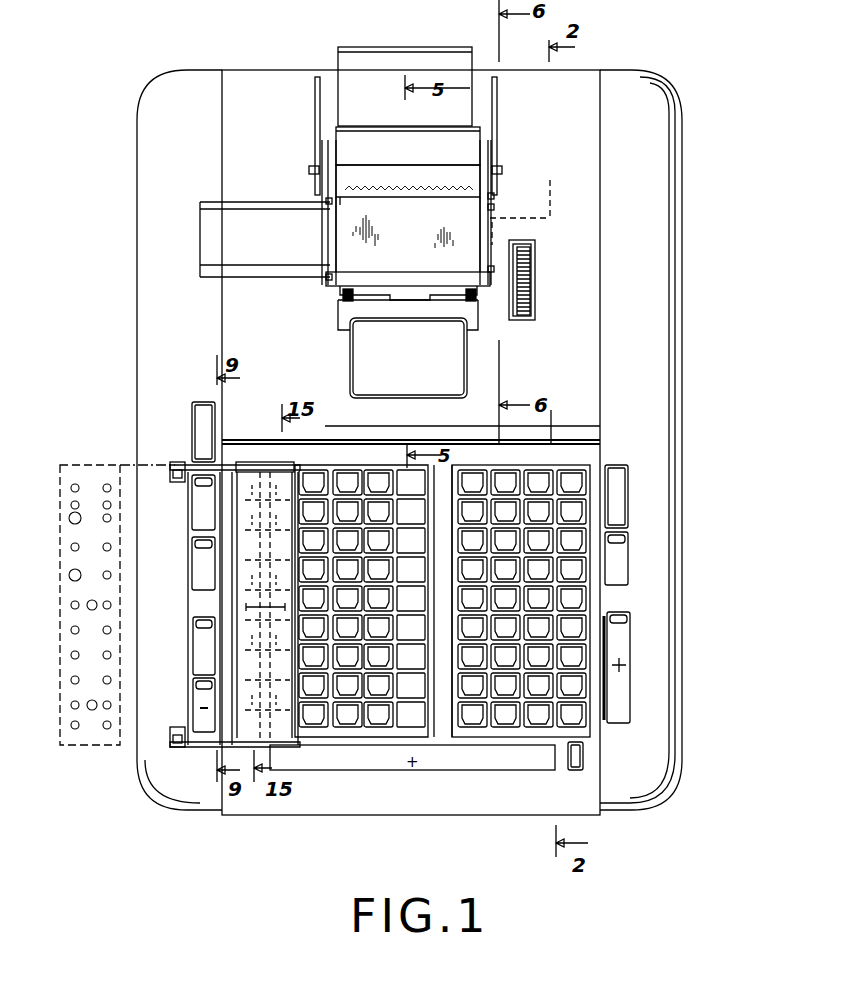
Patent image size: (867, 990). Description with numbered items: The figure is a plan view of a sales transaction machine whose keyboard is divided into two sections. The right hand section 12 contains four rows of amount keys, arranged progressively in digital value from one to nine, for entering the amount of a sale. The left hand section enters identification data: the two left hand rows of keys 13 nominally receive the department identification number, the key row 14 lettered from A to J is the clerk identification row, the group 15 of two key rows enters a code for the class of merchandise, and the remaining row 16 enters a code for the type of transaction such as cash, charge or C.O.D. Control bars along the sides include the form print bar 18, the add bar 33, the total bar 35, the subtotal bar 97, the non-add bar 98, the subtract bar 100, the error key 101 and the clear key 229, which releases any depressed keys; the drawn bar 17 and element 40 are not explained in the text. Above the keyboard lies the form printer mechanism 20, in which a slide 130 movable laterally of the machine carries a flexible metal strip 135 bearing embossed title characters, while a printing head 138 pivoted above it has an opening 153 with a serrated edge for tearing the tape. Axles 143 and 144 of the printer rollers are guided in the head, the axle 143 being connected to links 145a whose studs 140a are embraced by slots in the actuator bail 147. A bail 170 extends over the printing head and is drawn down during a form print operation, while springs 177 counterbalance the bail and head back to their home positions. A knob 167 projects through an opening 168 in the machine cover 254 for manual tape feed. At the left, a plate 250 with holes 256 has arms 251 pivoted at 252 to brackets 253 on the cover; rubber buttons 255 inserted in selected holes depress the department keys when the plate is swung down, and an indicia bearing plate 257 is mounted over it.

The right hand section 12 is at (570, 466).
The department identification key rows 13 is at (274, 470).
The clerk identification key row 14 is at (320, 470).
The merchandise class key group 15 is at (375, 468).
The transaction type key row 16 is at (403, 470).
The bottom plate 17 is at (392, 733).
The form print bar 18 is at (626, 472).
The form printer mechanism 20 is at (322, 148).
The add bar 33 is at (555, 737).
The total bar 35 is at (198, 515).
The key lever 40 is at (502, 733).
The subtotal bar 97 is at (198, 568).
The non-add bar 98 is at (197, 627).
The subtract bar 100 is at (197, 697).
The error key 101 is at (192, 422).
The slide 130 is at (298, 250).
The flexible metal strip 135 is at (390, 188).
The printing head 138 is at (455, 196).
The studs 140a is at (309, 170).
The axle 143 is at (494, 194).
The axle 144 is at (494, 268).
The links 145a is at (494, 208).
The actuator bail 147 is at (316, 156).
The opening 153 is at (397, 168).
The knob 167 is at (531, 272).
The opening 168 is at (531, 258).
The bail 170 is at (425, 286).
The springs 177 is at (340, 294).
The clear key 229 is at (572, 768).
The plate 250 is at (60, 742).
The arms 251 is at (230, 465).
The pivot 252 is at (180, 462).
The brackets 253 is at (173, 478).
The machine cover 254 is at (568, 78).
The rubber buttons 255 is at (75, 592).
The holes 256 is at (107, 545).
The indicia bearing plate 257 is at (107, 505).